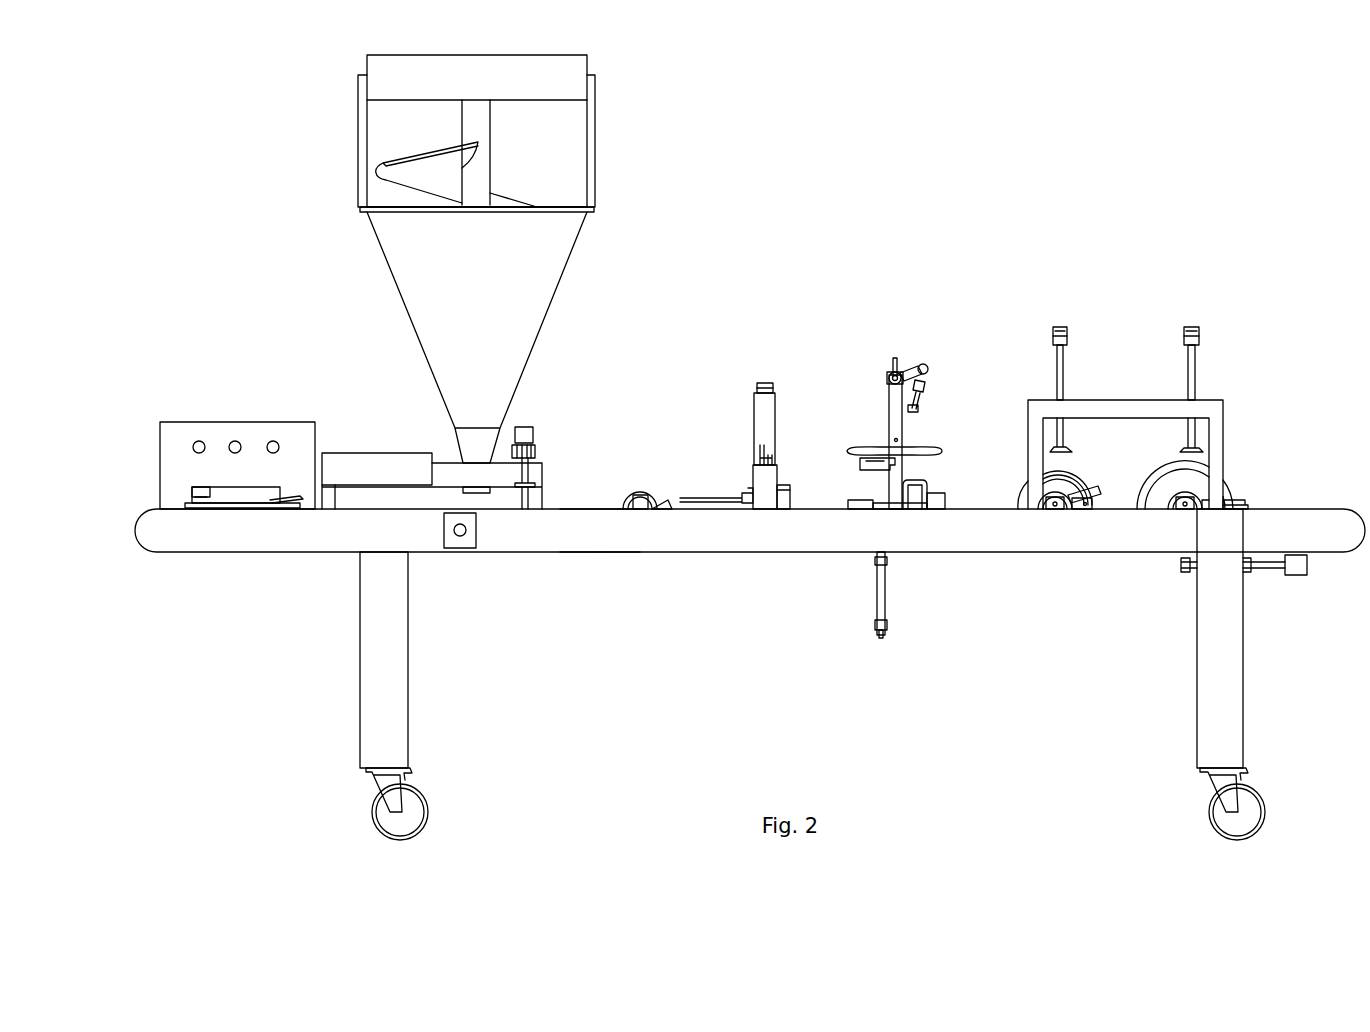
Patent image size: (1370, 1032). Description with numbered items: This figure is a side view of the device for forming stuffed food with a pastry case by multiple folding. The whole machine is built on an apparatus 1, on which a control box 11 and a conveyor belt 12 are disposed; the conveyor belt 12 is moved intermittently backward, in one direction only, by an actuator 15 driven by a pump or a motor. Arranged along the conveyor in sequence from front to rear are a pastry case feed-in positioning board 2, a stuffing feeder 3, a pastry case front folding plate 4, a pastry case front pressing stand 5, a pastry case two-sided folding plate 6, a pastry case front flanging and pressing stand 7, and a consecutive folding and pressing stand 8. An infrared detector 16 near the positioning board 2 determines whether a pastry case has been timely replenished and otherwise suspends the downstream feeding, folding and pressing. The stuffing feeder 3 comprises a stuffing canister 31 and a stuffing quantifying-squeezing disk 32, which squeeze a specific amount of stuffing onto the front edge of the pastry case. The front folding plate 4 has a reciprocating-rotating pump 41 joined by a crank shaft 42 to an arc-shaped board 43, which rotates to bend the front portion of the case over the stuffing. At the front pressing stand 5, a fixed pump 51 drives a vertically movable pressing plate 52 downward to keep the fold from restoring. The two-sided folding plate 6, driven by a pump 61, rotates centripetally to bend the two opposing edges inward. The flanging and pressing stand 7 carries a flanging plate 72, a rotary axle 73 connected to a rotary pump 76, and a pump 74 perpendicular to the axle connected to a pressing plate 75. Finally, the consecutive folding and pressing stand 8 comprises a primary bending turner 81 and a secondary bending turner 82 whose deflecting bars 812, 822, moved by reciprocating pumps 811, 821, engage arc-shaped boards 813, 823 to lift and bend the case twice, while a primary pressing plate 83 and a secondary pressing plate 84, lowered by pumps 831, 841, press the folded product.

The apparatus 1 is at (574, 525).
The control box 11 is at (209, 432).
The conveyor belt 12 is at (598, 509).
The actuator 15 is at (1258, 568).
The infrared detector 16 is at (257, 508).
The pastry case feed-in positioning board 2 is at (253, 492).
The stuffing feeder 3 is at (509, 259).
The stuffing canister 31 is at (577, 172).
The stuffing quantifying-squeezing disk 32 is at (356, 468).
The pastry case front folding plate 4 is at (661, 517).
The reciprocating-rotating pump 41 is at (638, 492).
The crank shaft 42 is at (640, 509).
The arc-shaped board 43 is at (662, 507).
The pastry case front pressing stand 5 is at (748, 488).
The pump 51 is at (771, 415).
The pressing plate 52 is at (787, 505).
The pastry case two-sided folding plate 6 is at (858, 503).
The pump 61 is at (883, 588).
The pastry case front flanging and pressing stand 7 is at (889, 472).
The flanging plate 72 is at (868, 448).
The rotary axle 73 is at (892, 375).
The pump 74 is at (900, 440).
The pressing plate 75 is at (917, 509).
The rotary pump 76 is at (903, 425).
The consecutive folding and pressing stand 8 is at (1122, 407).
The primary bending turner 81 is at (1058, 526).
The pump 811 is at (1060, 509).
The deflecting bar 812 is at (1055, 506).
The arc-shaped board 813 is at (1080, 478).
The secondary bending turner 82 is at (1213, 511).
The pump 821 is at (1225, 500).
The deflecting bar 822 is at (1183, 506).
The arc-shaped board 823 is at (1160, 465).
The primary pressing plate 83 is at (1055, 443).
The pump 831 is at (1057, 365).
The secondary pressing plate 84 is at (1198, 445).
The pump 841 is at (1192, 372).